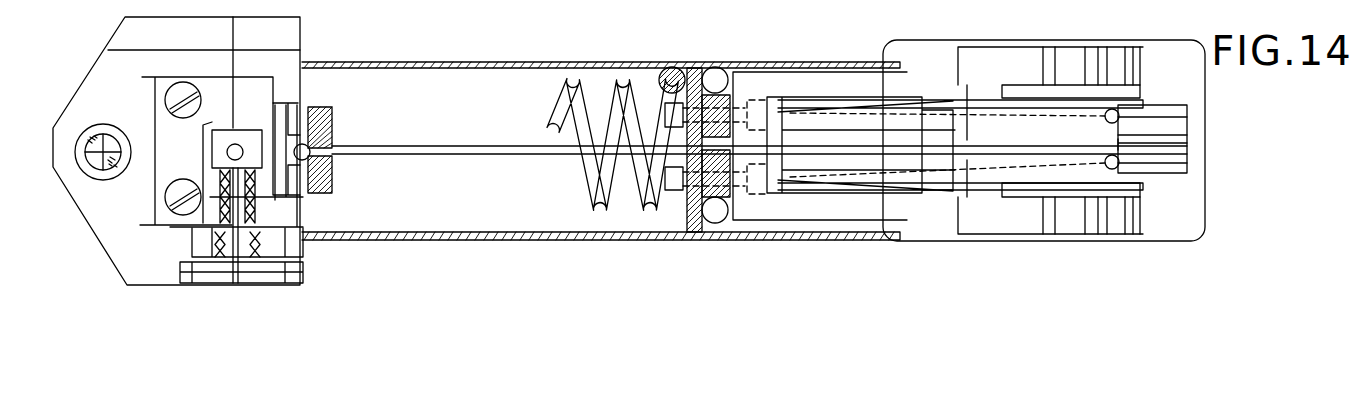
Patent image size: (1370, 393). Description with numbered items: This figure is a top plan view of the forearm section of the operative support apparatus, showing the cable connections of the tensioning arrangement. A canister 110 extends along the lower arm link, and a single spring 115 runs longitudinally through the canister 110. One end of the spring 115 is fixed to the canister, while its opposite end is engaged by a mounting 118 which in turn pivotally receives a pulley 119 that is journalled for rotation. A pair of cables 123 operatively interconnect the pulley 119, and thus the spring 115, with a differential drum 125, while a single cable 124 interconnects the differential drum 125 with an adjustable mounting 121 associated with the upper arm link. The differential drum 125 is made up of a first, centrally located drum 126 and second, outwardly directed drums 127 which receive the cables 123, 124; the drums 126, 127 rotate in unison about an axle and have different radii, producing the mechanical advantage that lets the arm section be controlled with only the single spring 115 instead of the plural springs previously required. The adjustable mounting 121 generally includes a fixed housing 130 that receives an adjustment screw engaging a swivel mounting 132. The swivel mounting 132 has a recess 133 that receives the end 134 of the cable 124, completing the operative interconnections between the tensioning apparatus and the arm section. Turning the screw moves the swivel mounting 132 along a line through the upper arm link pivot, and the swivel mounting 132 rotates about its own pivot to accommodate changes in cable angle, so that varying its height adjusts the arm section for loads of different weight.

The canister 110 is at (432, 57).
The spring 115 is at (583, 175).
The mounting 118 is at (692, 75).
The pulley 119 is at (795, 123).
The adjustable mounting 121 is at (305, 147).
The pair of cables 123 is at (1143, 100).
The single cable 124 is at (472, 143).
The differential drum 125 is at (938, 92).
The first, centrally located drum 126 is at (1180, 152).
The second, outwardly directed drums 127 is at (1022, 93).
The fixed housing 130 is at (292, 68).
The swivel mounting 132 is at (282, 185).
The recess 133 is at (334, 125).
The end of the cable 134 is at (333, 168).